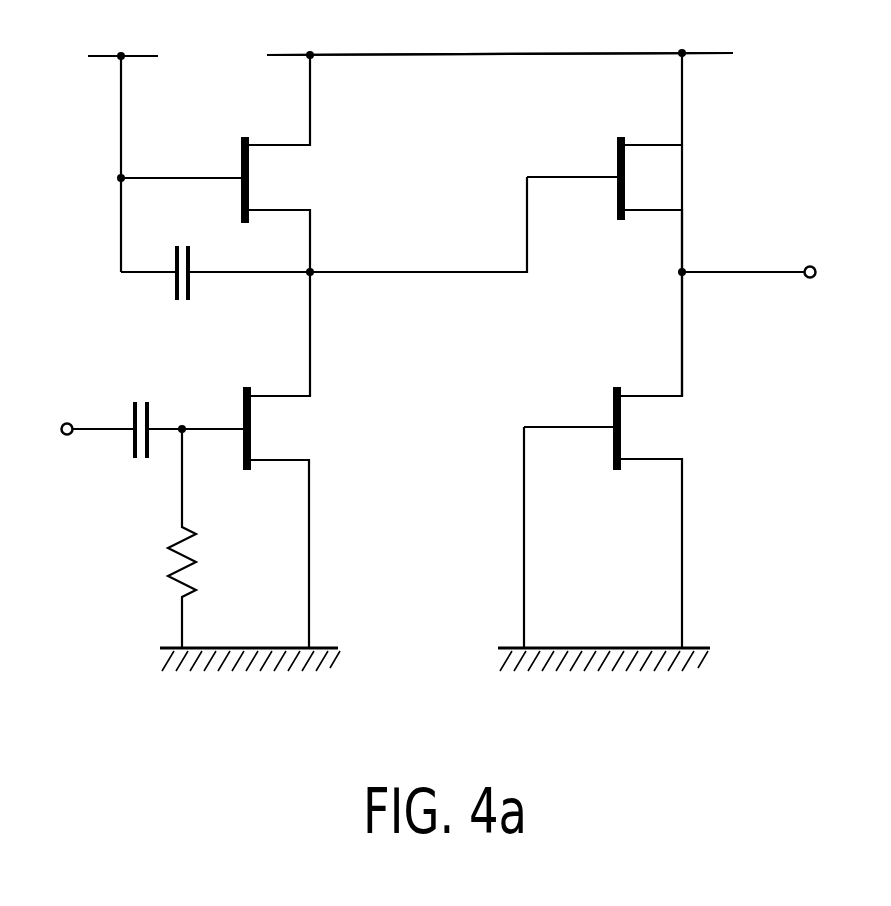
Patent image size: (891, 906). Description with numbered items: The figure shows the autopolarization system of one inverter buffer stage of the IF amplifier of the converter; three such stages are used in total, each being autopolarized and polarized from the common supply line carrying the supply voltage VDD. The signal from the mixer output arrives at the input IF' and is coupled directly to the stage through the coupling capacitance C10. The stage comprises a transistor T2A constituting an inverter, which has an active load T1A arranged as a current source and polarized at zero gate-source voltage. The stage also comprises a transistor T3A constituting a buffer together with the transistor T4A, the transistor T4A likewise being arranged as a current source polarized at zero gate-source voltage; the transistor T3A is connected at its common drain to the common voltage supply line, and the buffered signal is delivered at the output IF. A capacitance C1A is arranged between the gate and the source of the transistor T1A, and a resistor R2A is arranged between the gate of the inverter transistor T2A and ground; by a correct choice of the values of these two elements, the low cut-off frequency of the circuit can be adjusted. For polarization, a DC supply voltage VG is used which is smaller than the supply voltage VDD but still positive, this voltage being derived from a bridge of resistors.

The active load transistor T1A is at (238, 163).
The inverter transistor T2A is at (268, 460).
The buffer transistor T3A is at (628, 162).
The current source transistor T4A is at (625, 460).
The capacitance C1A is at (215, 289).
The coupling capacitance C10 is at (127, 450).
The resistor R2A is at (210, 538).
The DC supply voltage VG is at (123, 30).
The supply voltage VDD is at (500, 27).
The IF output IF is at (762, 252).
The IF input IF' is at (88, 410).